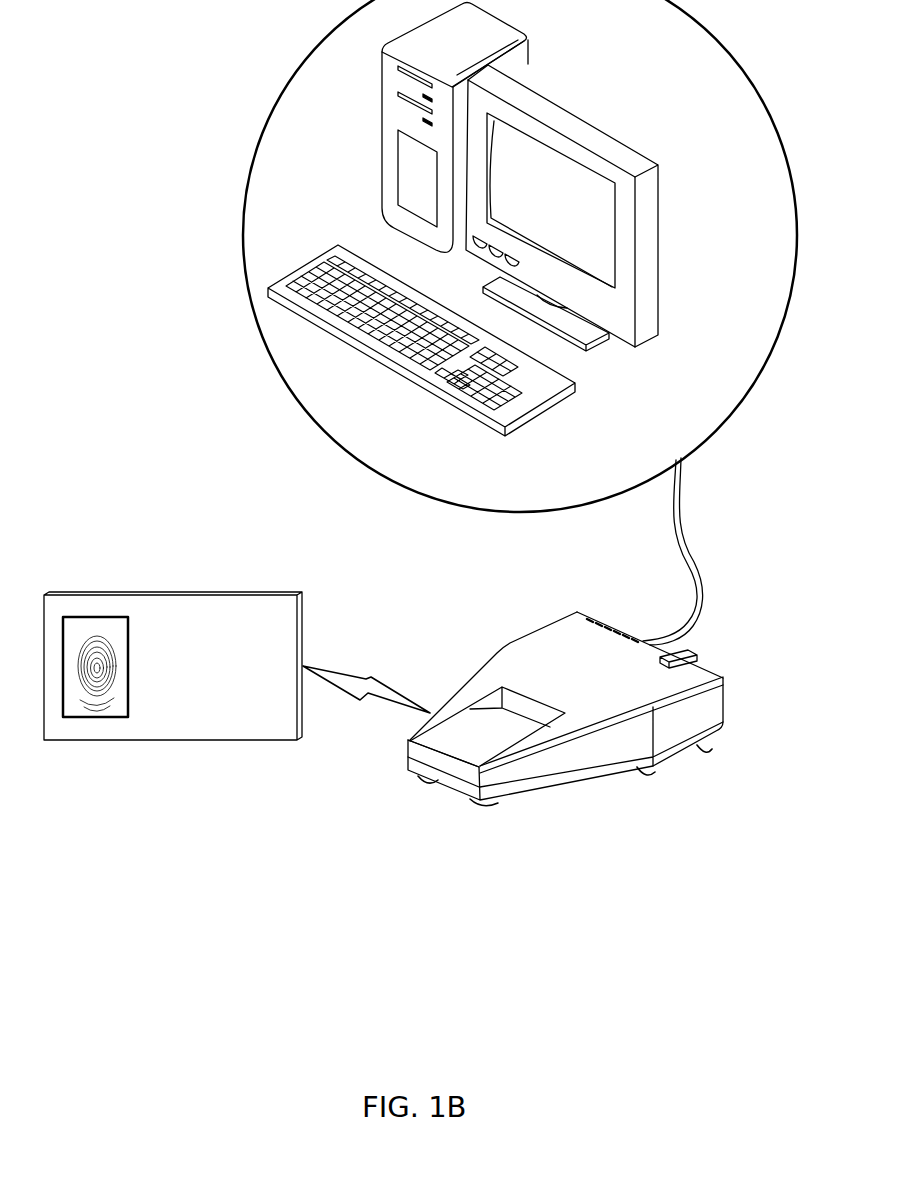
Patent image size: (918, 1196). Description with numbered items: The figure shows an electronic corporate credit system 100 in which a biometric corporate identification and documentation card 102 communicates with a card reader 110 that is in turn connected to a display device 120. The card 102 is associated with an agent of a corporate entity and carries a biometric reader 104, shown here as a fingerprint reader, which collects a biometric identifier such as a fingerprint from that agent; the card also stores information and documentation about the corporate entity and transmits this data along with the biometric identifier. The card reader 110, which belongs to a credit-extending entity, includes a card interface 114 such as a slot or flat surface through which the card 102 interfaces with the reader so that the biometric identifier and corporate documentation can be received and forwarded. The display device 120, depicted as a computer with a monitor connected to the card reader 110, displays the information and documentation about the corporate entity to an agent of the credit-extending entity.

The electronic corporate credit system 100 is at (118, 184).
The biometric corporate identification and documentation card 102 is at (173, 673).
The biometric reader 104 is at (110, 718).
The card reader 110 is at (565, 662).
The card interface 114 is at (453, 748).
The display device 120 is at (298, 142).